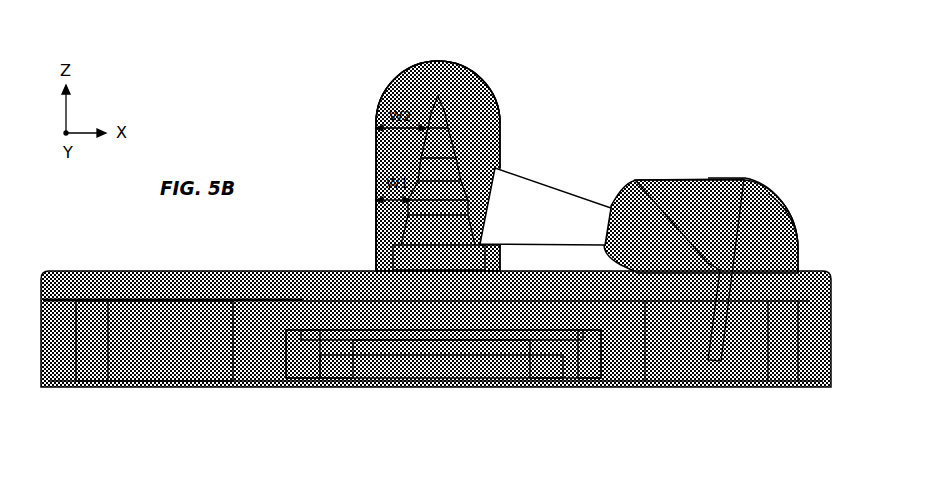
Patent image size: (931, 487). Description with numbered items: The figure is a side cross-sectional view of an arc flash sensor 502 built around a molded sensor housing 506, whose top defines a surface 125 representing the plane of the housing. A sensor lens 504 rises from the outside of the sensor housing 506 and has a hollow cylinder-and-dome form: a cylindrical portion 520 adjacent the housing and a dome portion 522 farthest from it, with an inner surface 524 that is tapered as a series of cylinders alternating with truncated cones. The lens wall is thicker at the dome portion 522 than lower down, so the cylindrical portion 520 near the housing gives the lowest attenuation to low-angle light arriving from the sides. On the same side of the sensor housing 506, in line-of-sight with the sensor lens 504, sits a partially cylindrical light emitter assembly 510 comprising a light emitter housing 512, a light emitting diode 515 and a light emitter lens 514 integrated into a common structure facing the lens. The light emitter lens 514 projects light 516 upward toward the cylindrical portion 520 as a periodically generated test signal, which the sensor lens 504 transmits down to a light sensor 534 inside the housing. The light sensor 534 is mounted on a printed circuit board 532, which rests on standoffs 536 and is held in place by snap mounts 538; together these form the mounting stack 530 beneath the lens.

The surface 125 is at (125, 254).
The arc flash sensor 502 is at (311, 63).
The sensor lens 504 is at (368, 150).
The sensor housing 506 is at (208, 379).
The light emitter assembly 510 is at (738, 153).
The light emitter housing 512 is at (773, 190).
The light emitter lens 514 is at (603, 198).
The light emitting diode 515 is at (763, 178).
The light 516 is at (548, 176).
The cylindrical portion 520 is at (368, 208).
The dome portion 522 is at (398, 60).
The inner surface 524 is at (450, 127).
The layer stack 530 is at (438, 391).
The printed circuit board 532 is at (377, 380).
The light sensor 534 is at (460, 379).
The standoffs 536 is at (328, 379).
The snap mounts 538 is at (287, 380).